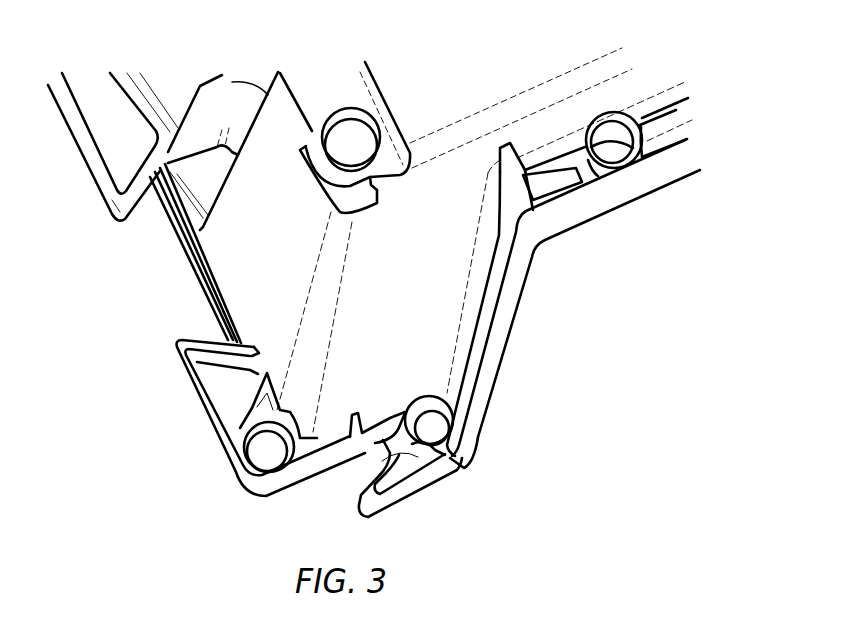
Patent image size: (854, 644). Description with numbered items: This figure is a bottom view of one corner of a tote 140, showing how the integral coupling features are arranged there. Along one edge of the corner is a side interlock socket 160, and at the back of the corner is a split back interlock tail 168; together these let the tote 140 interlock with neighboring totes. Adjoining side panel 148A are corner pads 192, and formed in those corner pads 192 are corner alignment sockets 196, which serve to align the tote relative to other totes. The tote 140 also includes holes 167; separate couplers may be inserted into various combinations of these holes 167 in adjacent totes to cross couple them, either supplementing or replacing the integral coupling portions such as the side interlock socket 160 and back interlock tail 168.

The tote 140 is at (422, 304).
The side panel 148A is at (290, 242).
The side interlock socket 160 is at (158, 272).
The holes 167 is at (255, 456).
The back interlock tail 168 is at (388, 505).
The corner pads 192 is at (325, 88).
The corner alignment sockets 196 is at (357, 138).